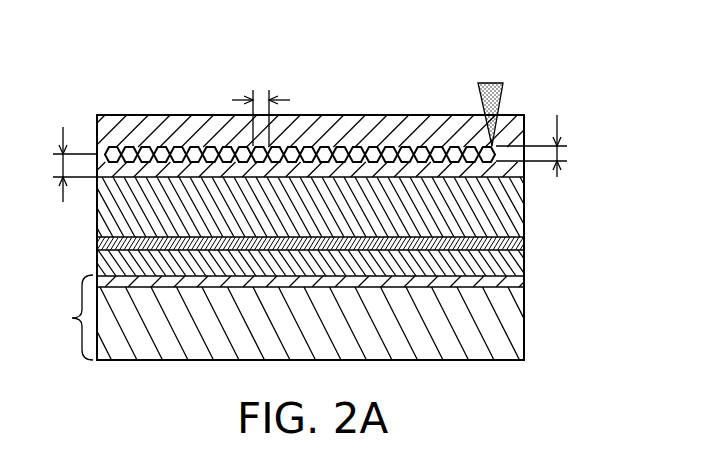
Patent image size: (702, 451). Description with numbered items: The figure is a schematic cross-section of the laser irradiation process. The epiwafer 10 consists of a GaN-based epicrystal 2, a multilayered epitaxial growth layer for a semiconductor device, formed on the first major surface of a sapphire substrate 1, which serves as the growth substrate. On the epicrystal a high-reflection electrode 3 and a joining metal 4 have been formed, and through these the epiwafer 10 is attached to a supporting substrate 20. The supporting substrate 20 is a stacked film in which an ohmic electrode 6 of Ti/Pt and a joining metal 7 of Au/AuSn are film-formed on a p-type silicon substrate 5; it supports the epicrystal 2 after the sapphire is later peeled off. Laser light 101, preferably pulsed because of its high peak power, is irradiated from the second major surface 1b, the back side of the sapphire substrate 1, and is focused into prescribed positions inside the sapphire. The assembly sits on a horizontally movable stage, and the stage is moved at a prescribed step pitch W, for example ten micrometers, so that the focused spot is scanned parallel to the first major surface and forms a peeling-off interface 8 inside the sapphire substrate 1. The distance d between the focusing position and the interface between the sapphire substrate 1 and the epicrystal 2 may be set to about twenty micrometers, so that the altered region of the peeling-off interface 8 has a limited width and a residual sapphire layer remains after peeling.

The epiwafer 10 is at (340, 95).
The sapphire substrate 1 is at (180, 117).
The second major surface 1b is at (124, 114).
The peeling-off interface 8 is at (393, 117).
The laser light 101 is at (491, 100).
The GaN-based epicrystal 2 is at (498, 209).
The high-reflection electrode 3 is at (508, 243).
The joining metal 4 is at (348, 264).
The joining metal 7 is at (498, 261).
The ohmic electrode 6 is at (497, 281).
The p-type silicon substrate 5 is at (497, 319).
The supporting substrate 20 is at (303, 317).
The step pitch W is at (261, 102).
The distance d is at (62, 164).